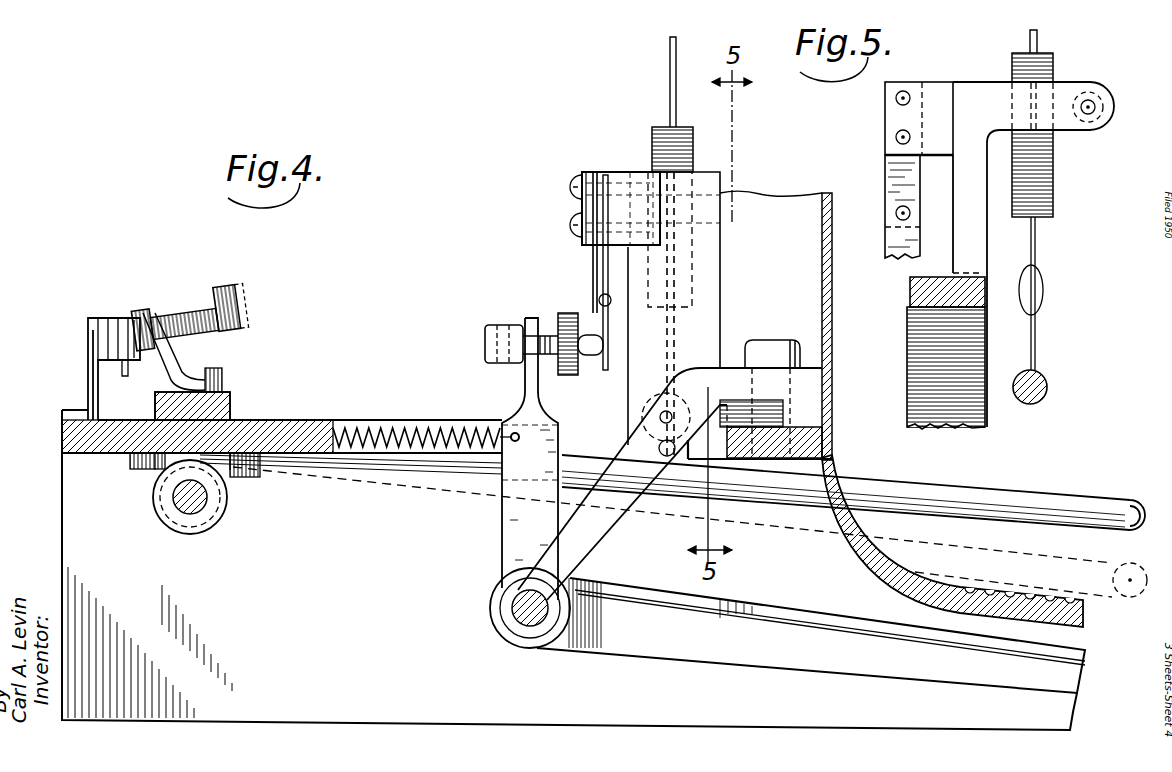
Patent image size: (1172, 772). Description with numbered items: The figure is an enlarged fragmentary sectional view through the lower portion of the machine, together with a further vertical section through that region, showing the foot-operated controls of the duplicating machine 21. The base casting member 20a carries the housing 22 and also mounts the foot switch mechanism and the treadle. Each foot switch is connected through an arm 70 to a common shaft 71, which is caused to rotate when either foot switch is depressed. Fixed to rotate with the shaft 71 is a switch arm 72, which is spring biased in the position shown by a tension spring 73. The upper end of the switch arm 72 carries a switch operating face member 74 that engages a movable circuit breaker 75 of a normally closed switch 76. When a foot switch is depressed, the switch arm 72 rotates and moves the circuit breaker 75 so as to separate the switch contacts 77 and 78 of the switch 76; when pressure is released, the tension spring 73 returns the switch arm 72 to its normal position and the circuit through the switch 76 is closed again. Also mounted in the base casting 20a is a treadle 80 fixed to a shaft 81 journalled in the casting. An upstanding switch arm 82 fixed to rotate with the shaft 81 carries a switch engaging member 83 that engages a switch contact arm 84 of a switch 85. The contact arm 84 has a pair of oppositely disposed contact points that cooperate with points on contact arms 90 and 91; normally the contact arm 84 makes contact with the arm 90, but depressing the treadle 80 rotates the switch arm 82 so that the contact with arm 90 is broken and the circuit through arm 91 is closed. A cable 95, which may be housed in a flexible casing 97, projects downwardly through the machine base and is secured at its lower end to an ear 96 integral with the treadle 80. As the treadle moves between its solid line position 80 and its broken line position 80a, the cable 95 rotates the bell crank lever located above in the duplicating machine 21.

In FIG. 4, the base casting member 20a is at (942, 590).
In FIG. 4, the duplicating machine 21 is at (304, 700).
In FIG. 4, the housing 22 is at (829, 332).
In FIG. 4, the arm 70 is at (735, 660).
In FIG. 4, the common shaft 71 is at (518, 620).
In FIG. 4, the switch arm 72 is at (503, 535).
In FIG. 4, the tension spring 73 is at (405, 428).
In FIG. 4, the switch operating face member 74 is at (572, 372).
In FIG. 4, the movable circuit breaker 75 is at (608, 348).
In FIG. 4, the normally closed switch 76 is at (570, 243).
In FIG. 5, the normally closed switch 76 is at (878, 140).
In FIG. 4, the switch contact 77 is at (597, 300).
In FIG. 4, the switch contact 78 is at (592, 298).
In FIG. 4, the treadle 80 is at (1045, 497).
In FIG. 5, the treadle 80 is at (1048, 382).
In FIG. 4, the treadle broken line position 80a is at (1115, 592).
In FIG. 4, the shaft 81 is at (205, 502).
In FIG. 4, the upstanding switch arm 82 is at (200, 365).
In FIG. 4, the switch engaging member 83 is at (214, 305).
In FIG. 4, the switch contact arm 84 is at (143, 312).
In FIG. 4, the switch 85 is at (108, 318).
In FIG. 4, the contact arm 90 is at (92, 344).
In FIG. 4, the contact arm 91 is at (120, 375).
In FIG. 4, the cable 95 is at (668, 58).
In FIG. 5, the cable 95 is at (1038, 44).
In FIG. 4, the ear 96 is at (660, 407).
In FIG. 5, the ear 96 is at (1040, 350).
In FIG. 4, the flexible casing 97 is at (652, 140).
In FIG. 5, the flexible casing 97 is at (1055, 72).